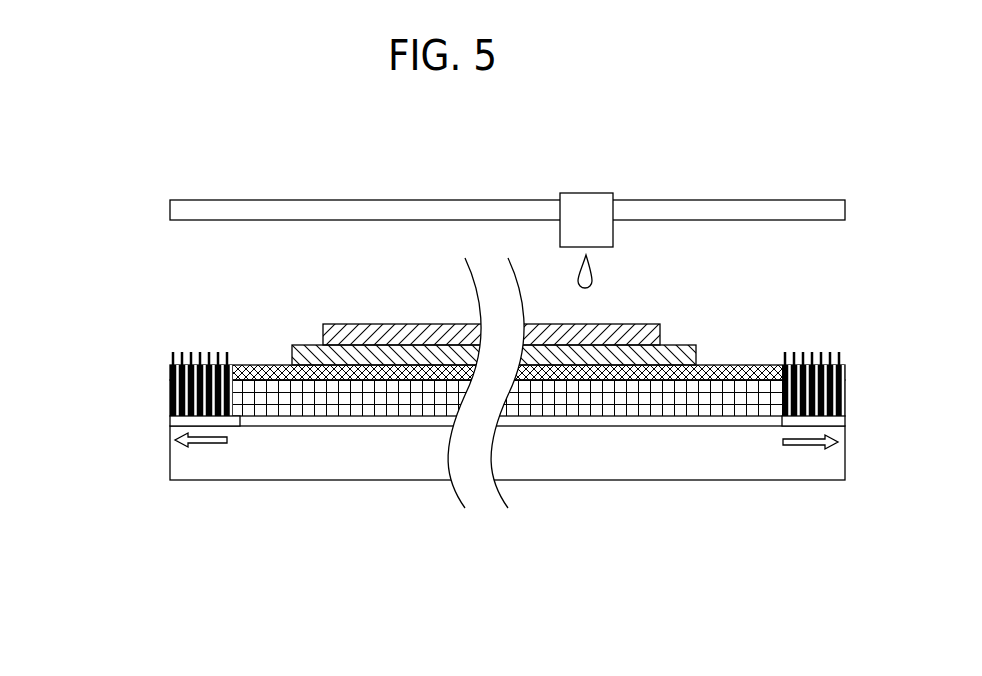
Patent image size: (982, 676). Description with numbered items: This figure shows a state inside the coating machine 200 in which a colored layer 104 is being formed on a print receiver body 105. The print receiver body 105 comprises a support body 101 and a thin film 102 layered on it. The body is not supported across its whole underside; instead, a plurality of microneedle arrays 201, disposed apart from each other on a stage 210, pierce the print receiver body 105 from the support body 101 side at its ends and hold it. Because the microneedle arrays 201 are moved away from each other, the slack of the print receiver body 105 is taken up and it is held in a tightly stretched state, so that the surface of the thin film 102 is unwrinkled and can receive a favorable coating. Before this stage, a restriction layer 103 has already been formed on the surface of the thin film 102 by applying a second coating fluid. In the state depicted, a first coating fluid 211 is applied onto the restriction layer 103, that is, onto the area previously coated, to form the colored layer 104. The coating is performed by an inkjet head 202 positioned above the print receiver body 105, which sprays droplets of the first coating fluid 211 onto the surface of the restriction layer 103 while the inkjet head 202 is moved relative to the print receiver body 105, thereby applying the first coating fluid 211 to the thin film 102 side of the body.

The support body 101 is at (170, 398).
The thin film 102 is at (170, 372).
The restriction layer 103 is at (300, 345).
The colored layer 104 is at (400, 324).
The print receiver body 105 is at (428, 383).
The coating machine 200 is at (507, 518).
The microneedle array 201 is at (205, 352).
The inkjet head 202 is at (592, 193).
The stage 210 is at (664, 480).
The first coating fluid 211 is at (600, 273).